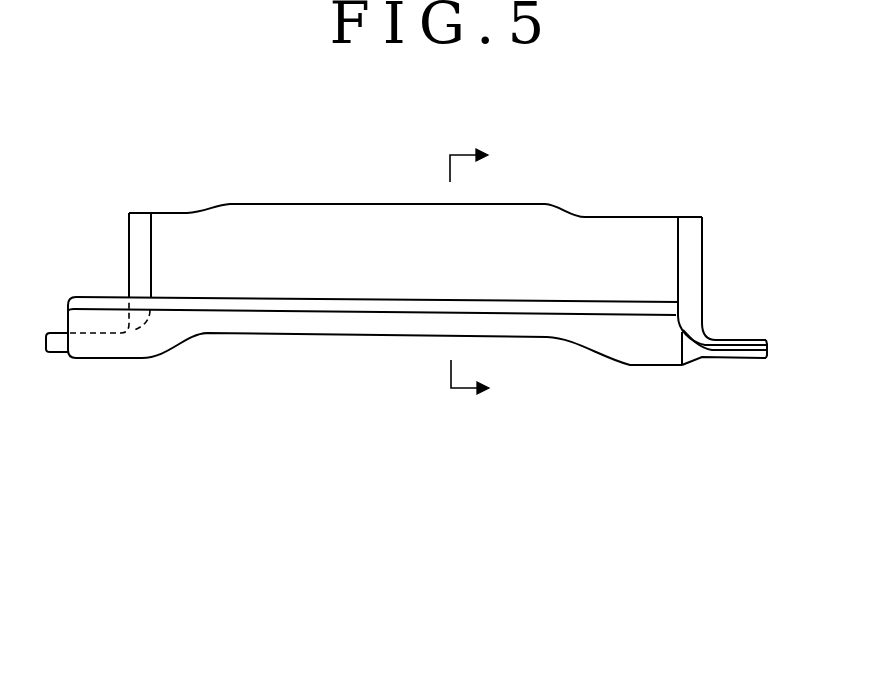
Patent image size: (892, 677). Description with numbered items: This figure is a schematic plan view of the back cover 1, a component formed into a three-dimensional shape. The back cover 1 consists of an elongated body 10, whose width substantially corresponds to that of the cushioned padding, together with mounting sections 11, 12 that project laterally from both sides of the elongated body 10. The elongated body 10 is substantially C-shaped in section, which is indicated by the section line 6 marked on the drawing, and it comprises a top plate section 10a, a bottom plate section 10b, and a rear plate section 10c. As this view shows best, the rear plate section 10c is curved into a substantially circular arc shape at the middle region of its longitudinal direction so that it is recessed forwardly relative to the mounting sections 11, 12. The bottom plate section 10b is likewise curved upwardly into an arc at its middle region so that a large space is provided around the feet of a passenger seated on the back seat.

The back cover 1 is at (553, 202).
The elongated body 10 is at (400, 206).
The top plate section 10a is at (311, 323).
The bottom plate section 10b is at (636, 233).
The rear plate section 10c is at (395, 340).
The mounting section 11 is at (90, 350).
The mounting section 12 is at (720, 352).
The section line 6- 6 is at (485, 271).